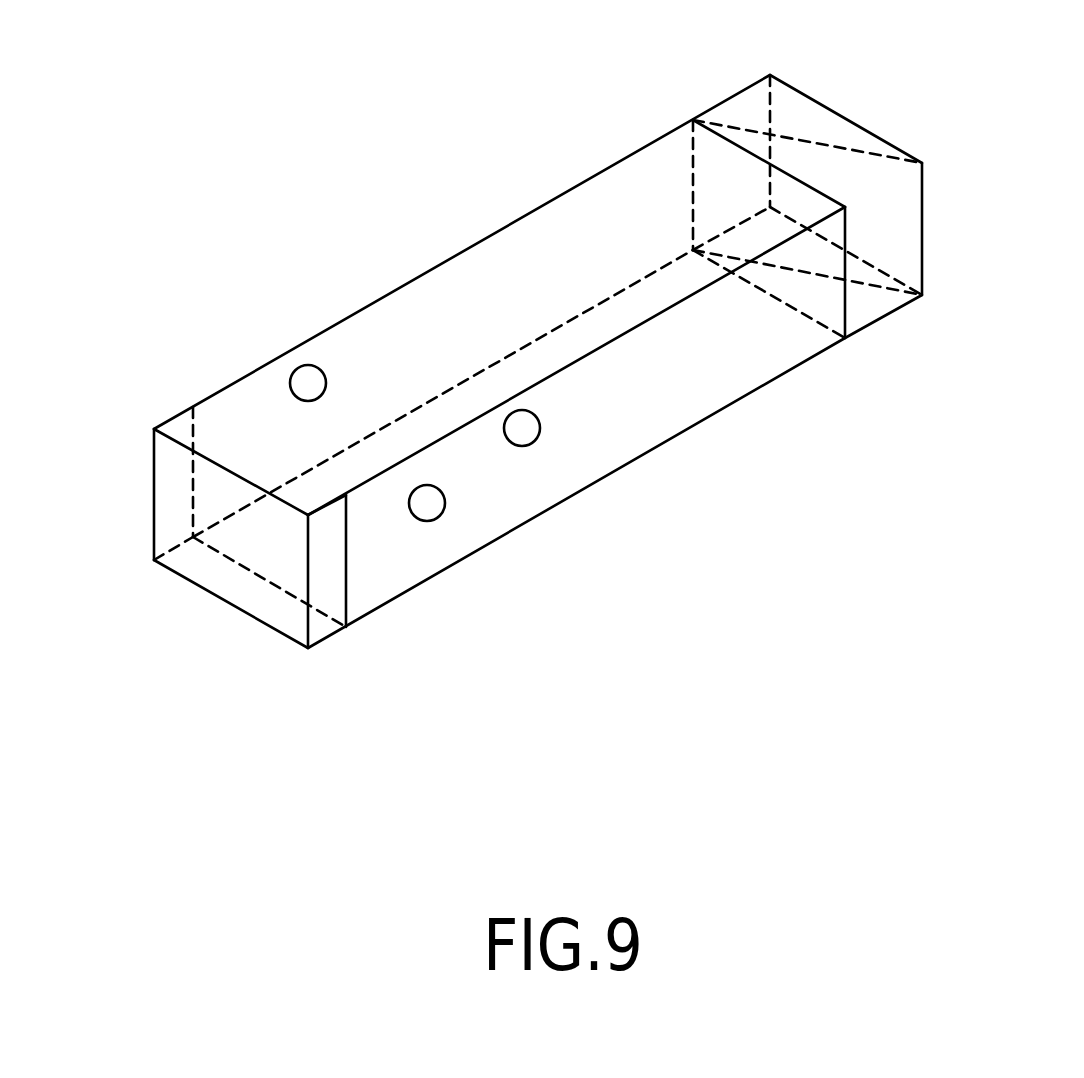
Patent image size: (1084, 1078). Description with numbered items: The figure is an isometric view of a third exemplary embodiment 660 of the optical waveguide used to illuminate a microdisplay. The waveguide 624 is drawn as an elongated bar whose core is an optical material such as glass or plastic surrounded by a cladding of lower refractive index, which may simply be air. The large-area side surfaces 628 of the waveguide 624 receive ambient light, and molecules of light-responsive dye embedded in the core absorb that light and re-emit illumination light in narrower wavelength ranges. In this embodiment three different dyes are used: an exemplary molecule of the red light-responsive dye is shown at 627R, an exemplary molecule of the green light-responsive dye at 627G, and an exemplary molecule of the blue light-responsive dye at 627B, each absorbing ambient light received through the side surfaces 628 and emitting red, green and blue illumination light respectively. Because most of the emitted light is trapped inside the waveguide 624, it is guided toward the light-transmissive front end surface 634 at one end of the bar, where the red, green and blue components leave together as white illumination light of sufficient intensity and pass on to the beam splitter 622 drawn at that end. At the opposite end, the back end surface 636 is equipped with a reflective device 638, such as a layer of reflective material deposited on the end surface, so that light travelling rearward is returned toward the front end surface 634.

The third exemplary embodiment of the waveguide 660 is at (506, 342).
The waveguide 624 is at (462, 252).
The beam splitter 622 is at (800, 195).
The reflective device 638 is at (196, 481).
The side surfaces 628 is at (267, 390).
The light-transmissive front end surface 634 is at (847, 302).
The back end surface 636 is at (332, 572).
The red light-responsive dye molecule 627R is at (310, 365).
The green light-responsive dye molecule 627G is at (432, 522).
The blue light-responsive dye molecule 627B is at (532, 447).